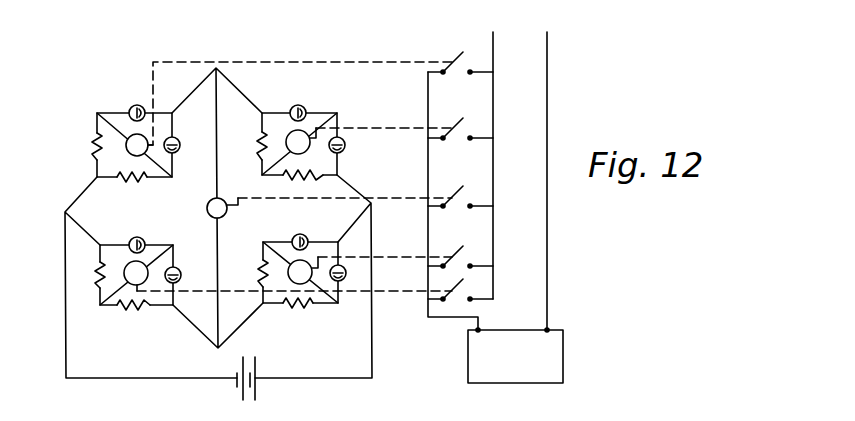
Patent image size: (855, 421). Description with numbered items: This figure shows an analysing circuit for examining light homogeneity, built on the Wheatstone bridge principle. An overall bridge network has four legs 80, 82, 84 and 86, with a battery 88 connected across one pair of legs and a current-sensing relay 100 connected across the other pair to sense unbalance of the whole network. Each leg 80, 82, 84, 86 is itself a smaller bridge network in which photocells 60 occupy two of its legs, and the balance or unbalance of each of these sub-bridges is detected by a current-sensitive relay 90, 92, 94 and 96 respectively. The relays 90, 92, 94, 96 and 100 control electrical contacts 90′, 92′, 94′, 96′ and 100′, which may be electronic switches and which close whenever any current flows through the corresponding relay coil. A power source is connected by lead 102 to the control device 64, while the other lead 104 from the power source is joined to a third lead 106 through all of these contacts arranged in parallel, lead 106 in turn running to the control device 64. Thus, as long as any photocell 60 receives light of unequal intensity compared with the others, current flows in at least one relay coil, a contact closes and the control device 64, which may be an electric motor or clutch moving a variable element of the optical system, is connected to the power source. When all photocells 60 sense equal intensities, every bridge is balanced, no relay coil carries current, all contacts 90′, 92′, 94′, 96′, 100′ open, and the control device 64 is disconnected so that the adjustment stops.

The photocells 60 is at (134, 106).
The control device 64 is at (563, 350).
The leg of bridge network 80 is at (91, 121).
The leg of bridge network 82 is at (122, 312).
The leg of bridge network 84 is at (332, 109).
The leg of bridge network 86 is at (344, 306).
The battery 88 is at (248, 372).
The relay 90 is at (277, 117).
The relay 92 is at (125, 273).
The relay 94 is at (288, 141).
The relay 96 is at (291, 276).
The relay 100 is at (208, 210).
The electrical contacts 90′ is at (453, 78).
The electrical contacts 92′ is at (463, 300).
The electrical contacts 94′ is at (453, 144).
The electrical contacts 96′ is at (463, 260).
The electrical contacts 100′ is at (455, 212).
The lead 102 is at (547, 38).
The lead 104 is at (493, 35).
The lead 106 is at (428, 317).